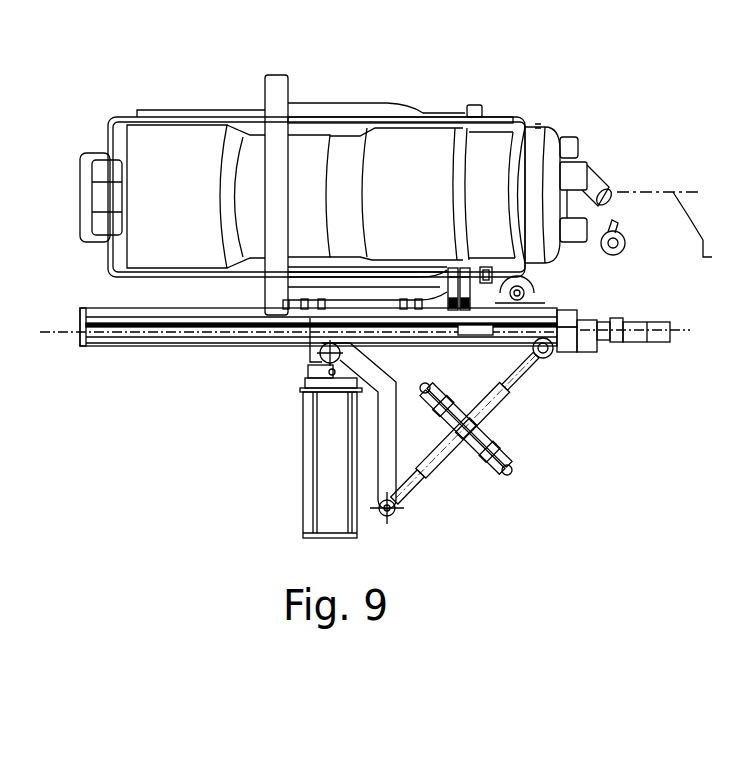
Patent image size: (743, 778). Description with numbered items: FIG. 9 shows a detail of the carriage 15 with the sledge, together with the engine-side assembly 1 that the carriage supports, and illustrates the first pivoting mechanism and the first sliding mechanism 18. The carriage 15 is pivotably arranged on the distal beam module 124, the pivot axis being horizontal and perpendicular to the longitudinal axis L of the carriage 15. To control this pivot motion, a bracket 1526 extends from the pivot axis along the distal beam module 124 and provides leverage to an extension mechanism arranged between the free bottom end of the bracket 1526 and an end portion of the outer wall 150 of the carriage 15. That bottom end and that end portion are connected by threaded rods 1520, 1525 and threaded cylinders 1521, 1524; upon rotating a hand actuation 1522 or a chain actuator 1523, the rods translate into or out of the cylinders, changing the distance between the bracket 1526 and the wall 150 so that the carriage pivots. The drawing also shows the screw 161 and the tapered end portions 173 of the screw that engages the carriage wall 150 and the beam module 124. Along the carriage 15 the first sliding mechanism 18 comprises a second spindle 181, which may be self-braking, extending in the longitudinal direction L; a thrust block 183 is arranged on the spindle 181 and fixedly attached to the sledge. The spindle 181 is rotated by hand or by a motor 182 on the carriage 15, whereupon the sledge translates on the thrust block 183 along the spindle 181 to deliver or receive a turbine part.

The engine 1 is at (545, 128).
The carriage 15 is at (104, 353).
The first sliding mechanism 18 is at (684, 268).
The outer wall of the carriage 150 is at (437, 364).
The screw 161 is at (320, 356).
The tapered end portions 173 is at (308, 372).
The second spindle 181 is at (470, 303).
The motor 182 is at (628, 342).
The thrust block 183 is at (395, 366).
The distal beam module 124 is at (333, 502).
The threaded rod 1520 is at (525, 378).
The threaded cylinder 1521 is at (507, 404).
The hand actuation 1522 is at (513, 462).
The chain actuator 1523 is at (520, 468).
The threaded cylinder 1524 is at (453, 458).
The threaded rod 1525 is at (417, 490).
The bracket 1526 is at (388, 435).